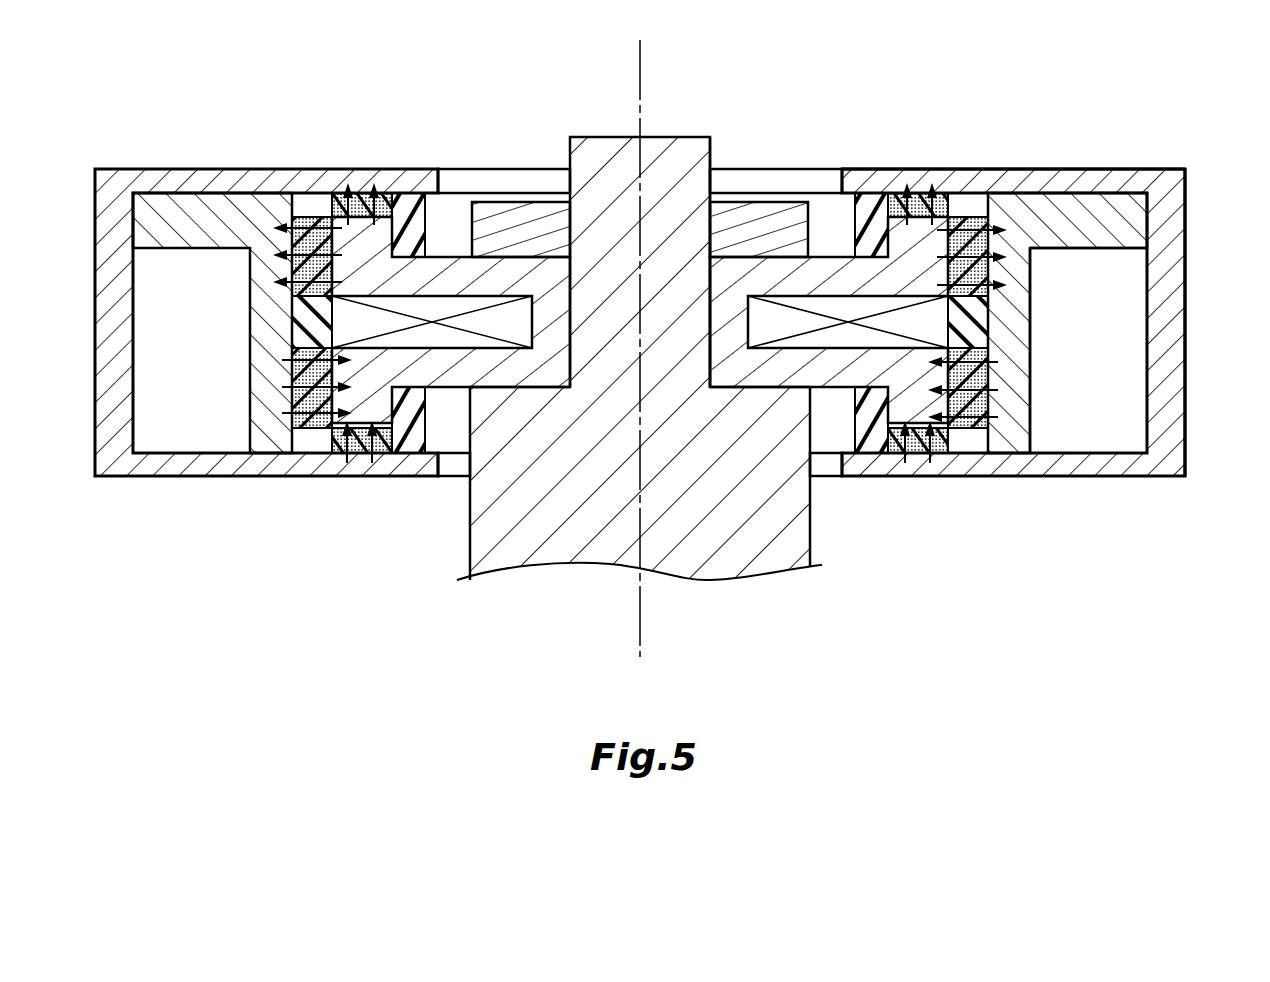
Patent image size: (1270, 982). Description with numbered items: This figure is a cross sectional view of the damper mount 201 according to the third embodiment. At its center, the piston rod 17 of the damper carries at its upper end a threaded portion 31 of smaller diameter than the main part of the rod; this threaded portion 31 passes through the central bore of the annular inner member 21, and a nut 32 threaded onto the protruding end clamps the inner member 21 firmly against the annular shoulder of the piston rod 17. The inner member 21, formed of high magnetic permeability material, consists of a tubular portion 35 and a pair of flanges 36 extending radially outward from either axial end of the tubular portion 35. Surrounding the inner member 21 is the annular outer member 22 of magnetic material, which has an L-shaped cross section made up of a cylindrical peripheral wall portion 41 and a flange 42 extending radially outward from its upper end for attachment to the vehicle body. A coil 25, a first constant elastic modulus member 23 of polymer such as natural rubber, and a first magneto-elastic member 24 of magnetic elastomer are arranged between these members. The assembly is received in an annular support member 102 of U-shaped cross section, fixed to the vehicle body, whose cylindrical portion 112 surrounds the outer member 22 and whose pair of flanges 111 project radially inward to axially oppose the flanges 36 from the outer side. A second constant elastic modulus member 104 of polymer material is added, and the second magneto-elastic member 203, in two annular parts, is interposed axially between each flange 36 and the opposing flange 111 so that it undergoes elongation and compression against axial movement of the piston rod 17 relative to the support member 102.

The damper mount 201 is at (330, 98).
The piston rod 17 is at (470, 523).
The threaded portion 31 is at (595, 137).
The tubular portion 35 is at (707, 280).
The inner member 21 is at (784, 248).
The nut 32 is at (532, 200).
The coil 25 is at (430, 295).
The flange 36 is at (836, 256).
The second constant elastic modulus member 104 is at (867, 193).
The second magneto-elastic member 203 is at (943, 194).
The support member 102 is at (1015, 162).
The flange 111 is at (1075, 169).
The cylindrical portion 112 is at (1184, 315).
The outer member 22 is at (1130, 184).
The first magneto-elastic member 24 is at (988, 273).
The first constant elastic modulus member 23 is at (988, 327).
The peripheral wall portion 41 is at (1032, 377).
The flange 42 is at (1107, 250).